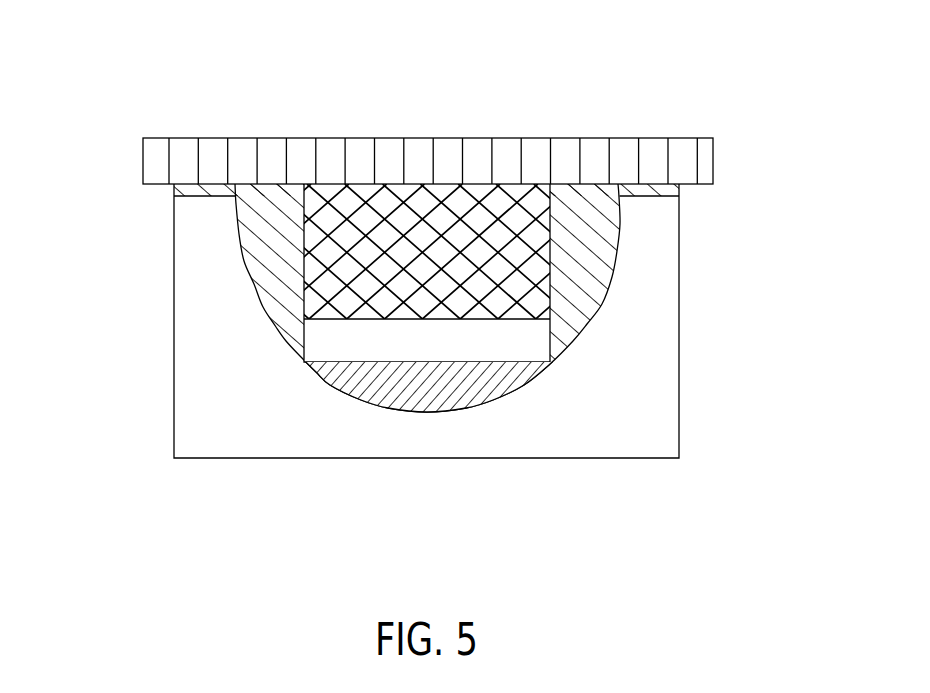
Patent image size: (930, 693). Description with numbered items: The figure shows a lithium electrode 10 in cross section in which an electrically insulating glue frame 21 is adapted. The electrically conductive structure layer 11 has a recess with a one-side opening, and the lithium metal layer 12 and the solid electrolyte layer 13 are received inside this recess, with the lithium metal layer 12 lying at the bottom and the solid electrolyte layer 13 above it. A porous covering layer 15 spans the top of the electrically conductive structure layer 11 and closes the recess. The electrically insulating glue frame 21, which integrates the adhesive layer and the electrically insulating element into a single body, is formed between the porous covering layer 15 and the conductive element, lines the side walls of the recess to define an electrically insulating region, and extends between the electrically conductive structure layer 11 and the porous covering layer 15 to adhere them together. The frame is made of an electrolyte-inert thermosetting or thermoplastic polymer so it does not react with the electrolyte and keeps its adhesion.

The lithium electrode 10 is at (97, 81).
The electrically conductive structure layer 11 is at (123, 215).
The lithium metal layer 12 is at (475, 385).
The solid electrolyte layer 13 is at (543, 337).
The porous covering layer 15 is at (713, 160).
The electrically insulating glue frame 21 is at (592, 219).